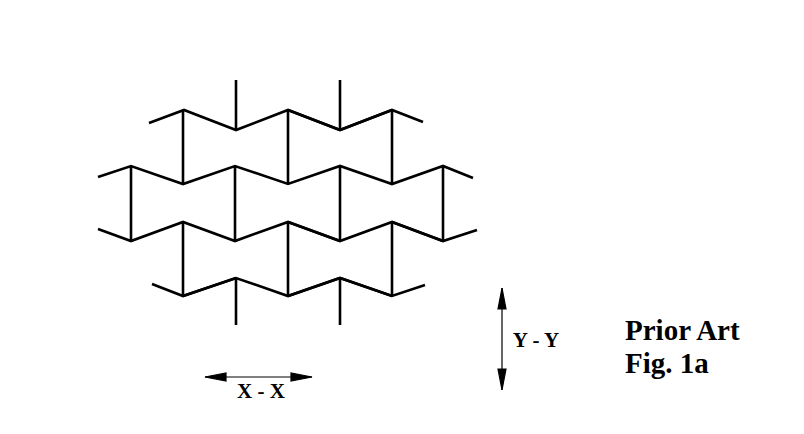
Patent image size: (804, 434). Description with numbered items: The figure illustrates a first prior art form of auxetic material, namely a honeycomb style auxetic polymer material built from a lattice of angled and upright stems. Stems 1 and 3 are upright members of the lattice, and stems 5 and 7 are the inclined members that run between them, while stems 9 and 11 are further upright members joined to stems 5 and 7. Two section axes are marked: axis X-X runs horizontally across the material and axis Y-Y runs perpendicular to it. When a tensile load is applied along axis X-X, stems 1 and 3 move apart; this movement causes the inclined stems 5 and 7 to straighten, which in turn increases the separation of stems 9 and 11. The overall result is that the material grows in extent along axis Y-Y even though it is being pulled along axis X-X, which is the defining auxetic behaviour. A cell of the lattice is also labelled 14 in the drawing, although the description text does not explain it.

The stem 1 is at (287, 146).
The stem 3 is at (395, 147).
The stem 5 is at (313, 118).
The stem 7 is at (368, 117).
The stem 9 is at (342, 105).
The stem 11 is at (340, 203).
The cell 14 is at (303, 270).